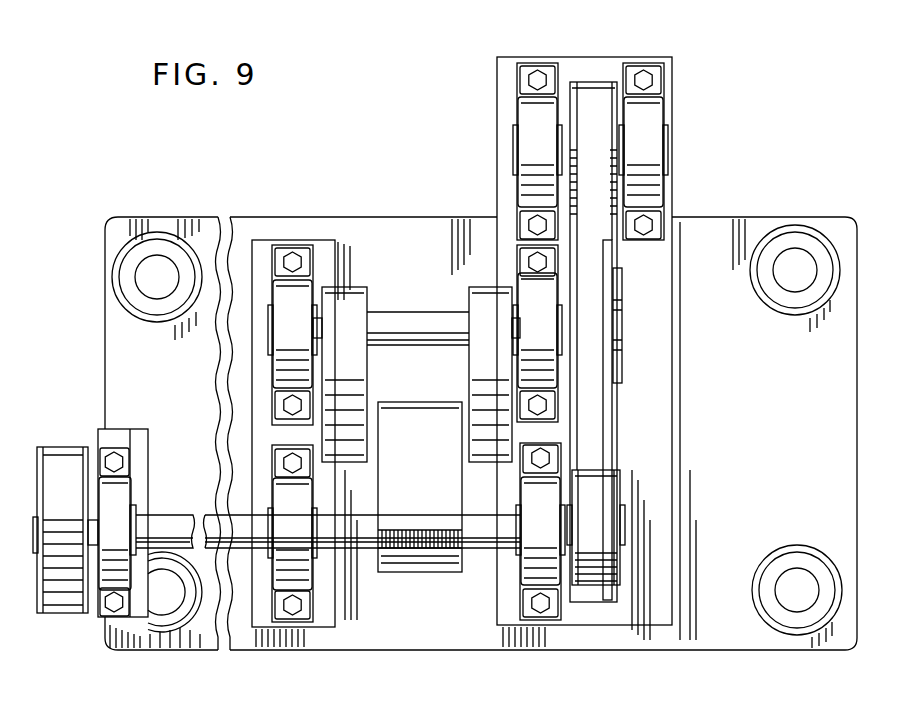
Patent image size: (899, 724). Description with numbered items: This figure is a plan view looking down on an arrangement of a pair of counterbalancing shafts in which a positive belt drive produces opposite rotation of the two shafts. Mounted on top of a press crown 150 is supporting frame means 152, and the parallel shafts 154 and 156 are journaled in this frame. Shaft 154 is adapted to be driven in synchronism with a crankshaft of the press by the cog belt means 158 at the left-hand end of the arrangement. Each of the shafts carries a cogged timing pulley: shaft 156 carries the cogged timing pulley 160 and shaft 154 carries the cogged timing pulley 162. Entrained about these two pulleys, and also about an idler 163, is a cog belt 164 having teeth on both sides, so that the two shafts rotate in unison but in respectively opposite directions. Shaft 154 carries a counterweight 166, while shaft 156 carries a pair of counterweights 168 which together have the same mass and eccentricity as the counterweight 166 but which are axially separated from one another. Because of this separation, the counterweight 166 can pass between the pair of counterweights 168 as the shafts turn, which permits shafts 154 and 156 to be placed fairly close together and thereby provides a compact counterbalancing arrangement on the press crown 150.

The press crown 150 is at (403, 228).
The supporting frame means 152 is at (498, 103).
The shaft 154 is at (175, 520).
The shaft 156 is at (425, 338).
The cog belt means 158 is at (72, 615).
The cogged timing pulley 160 is at (618, 565).
The cogged timing pulley 162 is at (618, 290).
The idler 163 is at (588, 92).
The cog belt 164 is at (603, 433).
The counterweight 166 is at (445, 565).
The pair of counterweights 168 is at (468, 290).